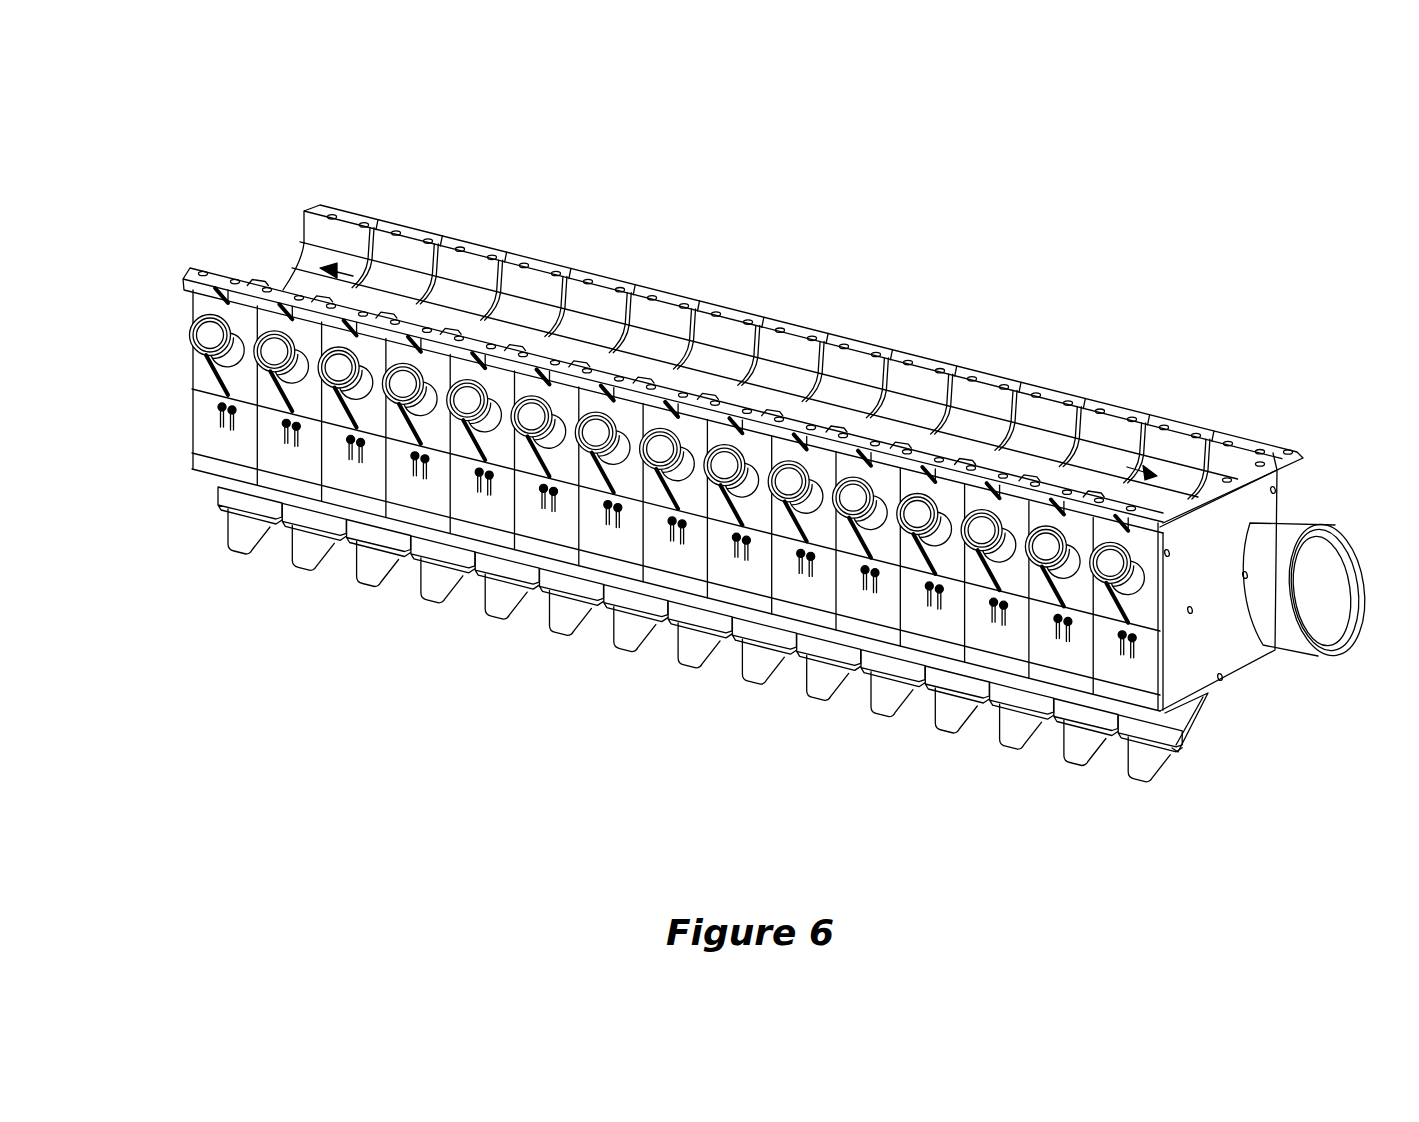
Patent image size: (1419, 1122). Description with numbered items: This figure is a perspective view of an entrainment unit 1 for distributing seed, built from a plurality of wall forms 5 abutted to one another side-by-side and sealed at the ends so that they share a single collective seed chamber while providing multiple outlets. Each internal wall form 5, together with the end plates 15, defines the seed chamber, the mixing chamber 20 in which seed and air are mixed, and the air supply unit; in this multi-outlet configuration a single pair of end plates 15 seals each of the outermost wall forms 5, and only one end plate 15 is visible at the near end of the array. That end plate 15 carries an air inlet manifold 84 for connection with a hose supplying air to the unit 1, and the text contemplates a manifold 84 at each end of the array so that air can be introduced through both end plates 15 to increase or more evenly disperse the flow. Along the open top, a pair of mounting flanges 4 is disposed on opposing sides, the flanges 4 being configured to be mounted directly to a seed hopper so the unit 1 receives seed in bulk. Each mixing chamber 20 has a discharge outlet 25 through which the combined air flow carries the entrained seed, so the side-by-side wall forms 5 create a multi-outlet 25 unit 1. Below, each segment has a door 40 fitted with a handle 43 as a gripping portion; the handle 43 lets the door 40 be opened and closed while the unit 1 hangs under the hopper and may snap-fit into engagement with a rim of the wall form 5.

The entrainment unit 1 is at (297, 103).
The mounting flanges 4 is at (413, 234).
The wall form 5 is at (876, 316).
The end plate 15 is at (1207, 650).
The mixing chamber 20 is at (652, 345).
The discharge outlet 25 is at (295, 378).
The door 40 is at (1196, 728).
The handle 43 is at (690, 661).
The air inlet manifold 84 is at (1318, 527).